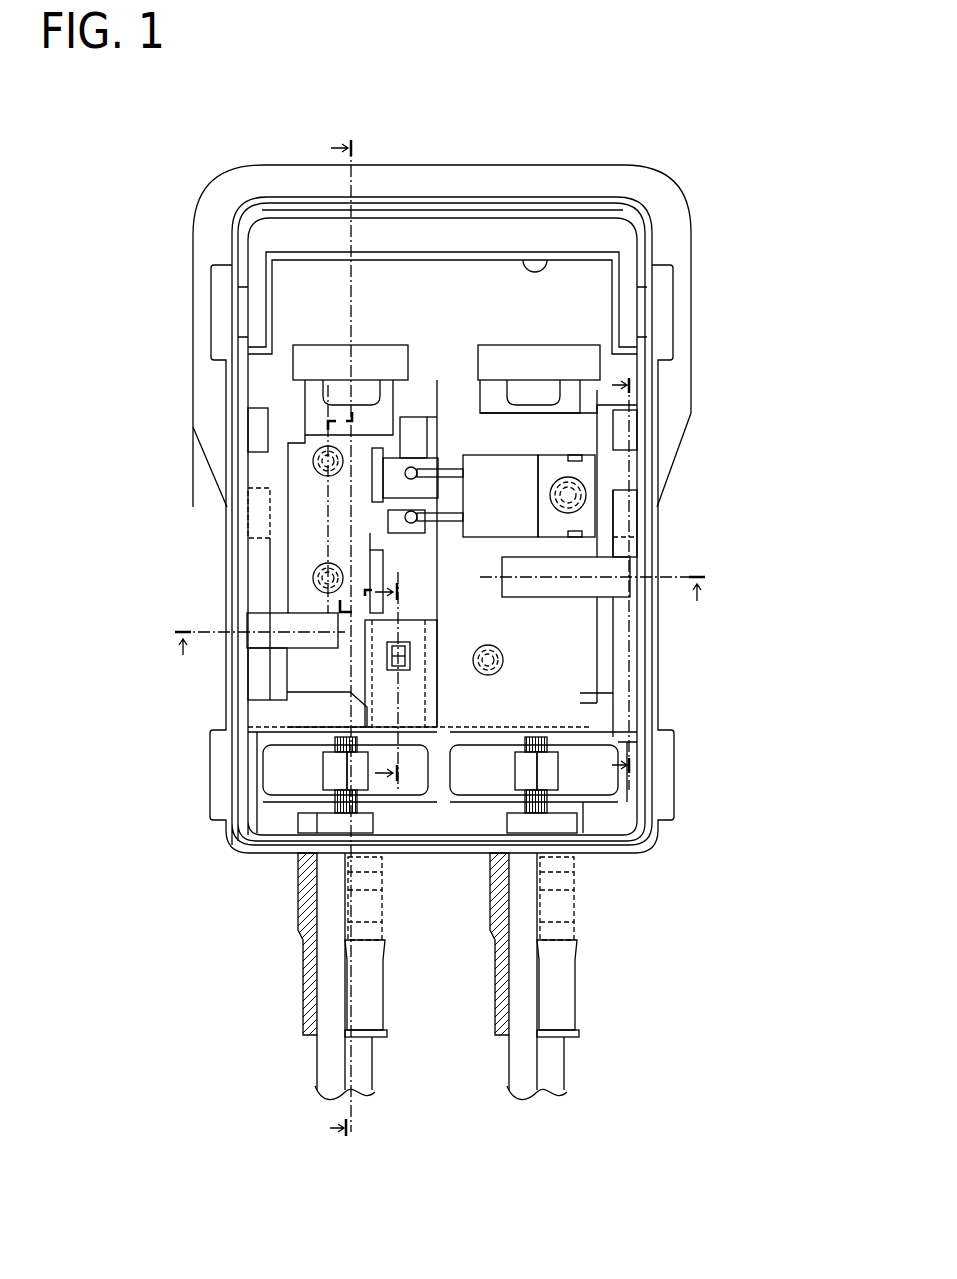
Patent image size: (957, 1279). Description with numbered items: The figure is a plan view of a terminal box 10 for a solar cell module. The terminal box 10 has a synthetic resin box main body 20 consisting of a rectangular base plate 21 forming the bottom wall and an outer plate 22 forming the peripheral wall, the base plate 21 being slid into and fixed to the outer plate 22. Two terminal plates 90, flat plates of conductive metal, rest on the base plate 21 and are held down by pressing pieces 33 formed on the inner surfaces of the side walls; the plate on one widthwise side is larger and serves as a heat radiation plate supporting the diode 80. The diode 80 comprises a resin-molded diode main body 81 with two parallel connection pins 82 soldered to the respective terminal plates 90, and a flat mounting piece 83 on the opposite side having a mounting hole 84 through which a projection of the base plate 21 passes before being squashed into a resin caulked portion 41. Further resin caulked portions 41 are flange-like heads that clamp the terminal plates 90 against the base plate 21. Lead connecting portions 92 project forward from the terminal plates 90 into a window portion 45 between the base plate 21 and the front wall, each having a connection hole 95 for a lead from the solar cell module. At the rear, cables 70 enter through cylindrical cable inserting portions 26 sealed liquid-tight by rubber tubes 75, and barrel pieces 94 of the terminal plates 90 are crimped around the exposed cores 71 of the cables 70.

The terminal box 10 is at (449, 146).
The box main body 20 is at (515, 165).
The base plate 21 is at (608, 673).
The outer plate 22 is at (386, 197).
The cable inserting portion 26 is at (303, 908).
The pressing piece 33 is at (298, 620).
The resin caulked portion 41 is at (461, 670).
The window portion 45 is at (547, 258).
The cable 70 is at (370, 1092).
The core 71 is at (553, 727).
The tube 75 is at (307, 982).
The diode 80 is at (595, 483).
The diode main body 81 is at (520, 530).
The connection pin 82 is at (422, 476).
The mounting piece 83 is at (588, 466).
The mounting hole 84 is at (588, 513).
The terminal plate 90 is at (448, 275).
The lead connecting portion 92 is at (335, 350).
The barrel piece 94 is at (353, 785).
The connection hole 95 is at (336, 382).